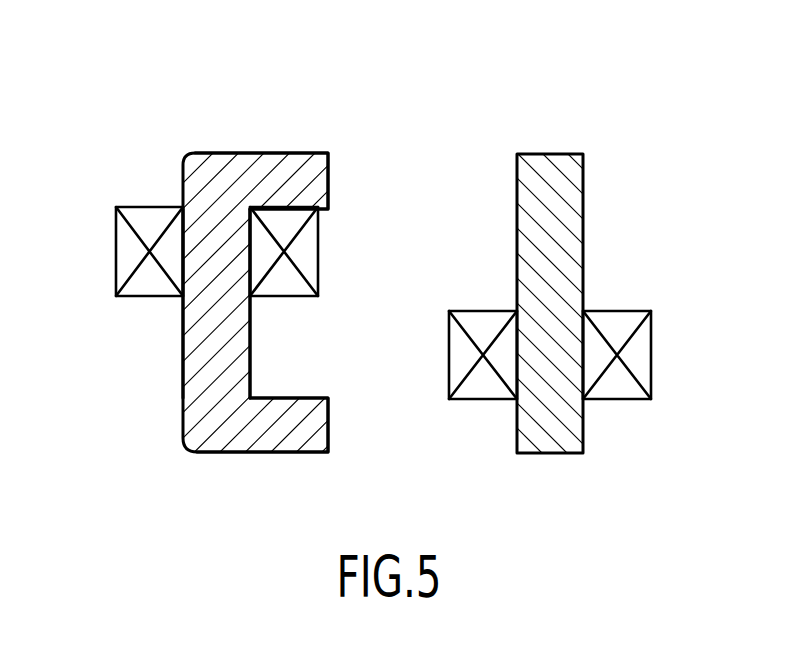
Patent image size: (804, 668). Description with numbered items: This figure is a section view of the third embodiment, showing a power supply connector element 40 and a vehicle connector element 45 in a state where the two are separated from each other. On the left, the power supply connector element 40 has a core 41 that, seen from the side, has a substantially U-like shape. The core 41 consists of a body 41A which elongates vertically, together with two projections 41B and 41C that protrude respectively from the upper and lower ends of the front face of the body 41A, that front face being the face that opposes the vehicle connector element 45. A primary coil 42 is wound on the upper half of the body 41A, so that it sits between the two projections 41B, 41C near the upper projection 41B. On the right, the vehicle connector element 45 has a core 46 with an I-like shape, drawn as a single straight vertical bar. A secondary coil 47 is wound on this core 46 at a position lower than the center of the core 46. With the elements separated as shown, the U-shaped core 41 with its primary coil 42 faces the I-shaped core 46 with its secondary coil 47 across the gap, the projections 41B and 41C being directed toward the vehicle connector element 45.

The power supply connector element 40 is at (273, 118).
The core 41 is at (191, 152).
The body 41A is at (190, 385).
The projection 41B is at (305, 162).
The projection 41C is at (275, 442).
The primary coil 42 is at (128, 250).
The vehicle connector element 45 is at (580, 140).
The core 46 is at (573, 225).
The secondary coil 47 is at (643, 355).